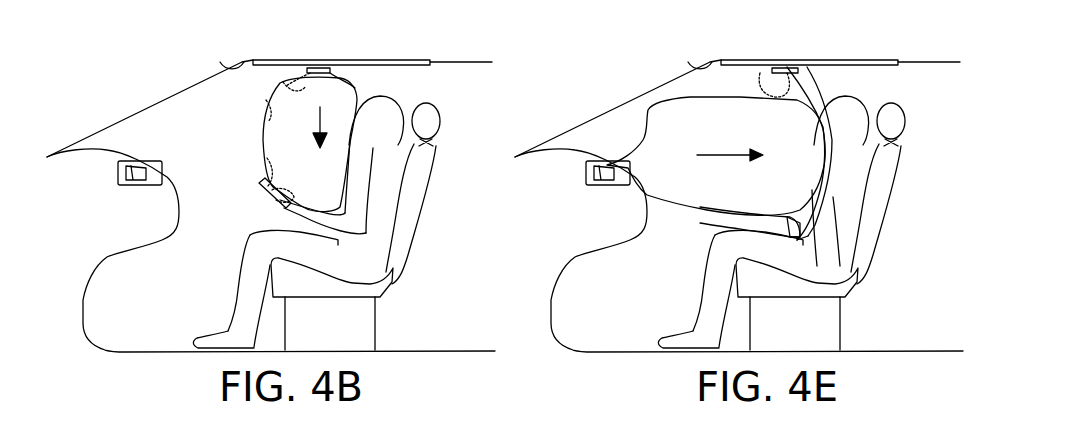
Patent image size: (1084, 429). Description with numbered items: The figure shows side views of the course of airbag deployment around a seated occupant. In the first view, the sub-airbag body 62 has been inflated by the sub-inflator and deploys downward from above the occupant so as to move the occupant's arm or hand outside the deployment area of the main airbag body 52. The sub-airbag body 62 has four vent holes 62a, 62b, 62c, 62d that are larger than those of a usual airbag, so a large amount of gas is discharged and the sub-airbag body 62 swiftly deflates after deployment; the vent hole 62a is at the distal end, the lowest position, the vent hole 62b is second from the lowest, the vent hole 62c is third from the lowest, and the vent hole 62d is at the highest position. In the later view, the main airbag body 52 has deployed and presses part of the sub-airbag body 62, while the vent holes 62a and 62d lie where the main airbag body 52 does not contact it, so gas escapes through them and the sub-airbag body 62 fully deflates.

In FIG. 4E, the main airbag body 52 is at (667, 101).
In FIG. 4B, the sub-airbag body 62 is at (347, 84).
In FIG. 4E, the sub-airbag body 62 is at (810, 93).
In FIG. 4B, the vent hole 62a is at (261, 184).
In FIG. 4E, the vent hole 62a is at (797, 232).
In FIG. 4B, the vent hole 62b is at (264, 167).
In FIG. 4B, the vent hole 62c is at (262, 110).
In FIG. 4B, the vent hole 62d is at (287, 70).
In FIG. 4E, the vent hole 62d is at (766, 85).